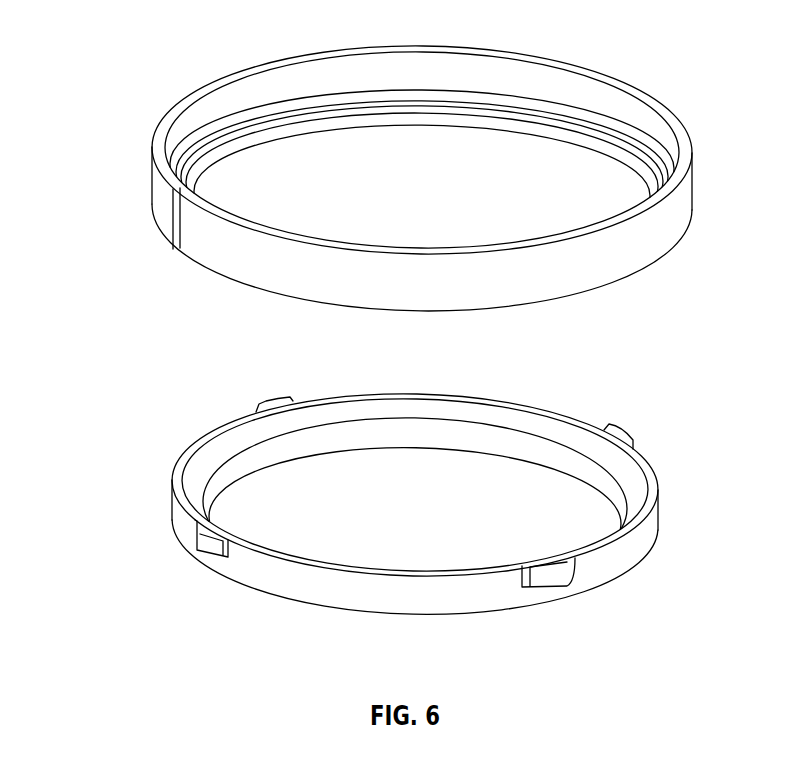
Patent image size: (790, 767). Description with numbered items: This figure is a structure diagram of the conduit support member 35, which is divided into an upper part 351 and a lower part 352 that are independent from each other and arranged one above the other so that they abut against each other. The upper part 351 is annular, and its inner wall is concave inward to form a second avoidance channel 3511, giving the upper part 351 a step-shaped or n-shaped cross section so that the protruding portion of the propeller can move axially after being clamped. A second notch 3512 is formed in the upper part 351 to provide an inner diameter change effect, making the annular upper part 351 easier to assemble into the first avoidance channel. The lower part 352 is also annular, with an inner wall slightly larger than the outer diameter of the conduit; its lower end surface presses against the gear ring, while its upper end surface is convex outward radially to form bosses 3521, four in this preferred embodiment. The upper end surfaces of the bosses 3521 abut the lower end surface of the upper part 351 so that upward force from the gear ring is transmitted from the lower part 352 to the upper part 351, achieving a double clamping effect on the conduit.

The conduit support member 35 is at (143, 308).
The upper part 351 is at (272, 272).
The second avoidance channel 3511 is at (522, 75).
The second notch 3512 is at (172, 228).
The lower part 352 is at (300, 588).
The boss 3521 is at (553, 578).